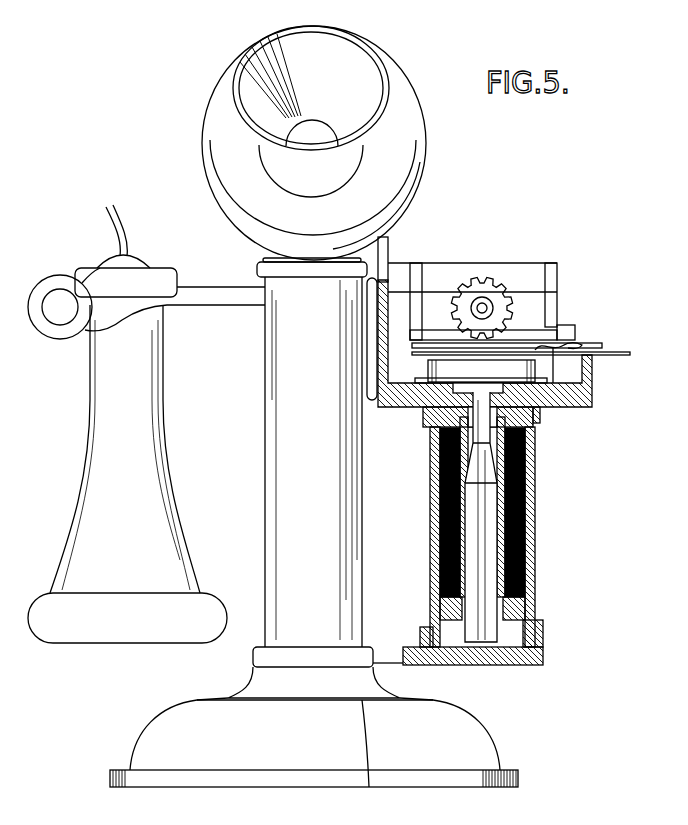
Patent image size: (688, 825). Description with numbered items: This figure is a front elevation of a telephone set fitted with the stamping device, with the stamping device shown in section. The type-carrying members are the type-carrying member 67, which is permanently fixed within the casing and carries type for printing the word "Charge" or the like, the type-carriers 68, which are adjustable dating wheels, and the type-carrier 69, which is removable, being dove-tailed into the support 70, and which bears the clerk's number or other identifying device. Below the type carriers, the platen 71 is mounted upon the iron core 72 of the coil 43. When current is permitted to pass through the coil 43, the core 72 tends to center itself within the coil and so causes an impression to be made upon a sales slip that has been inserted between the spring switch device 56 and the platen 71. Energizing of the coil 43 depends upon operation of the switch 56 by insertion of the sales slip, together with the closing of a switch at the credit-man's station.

The coil 43 is at (533, 533).
The spring switch device 56 is at (587, 407).
The type-carrying member 67 is at (430, 333).
The type-carriers 68 is at (513, 305).
The type-carrier 69 is at (572, 338).
The support 70 is at (556, 313).
The platen 71 is at (553, 348).
The iron core 72 is at (487, 587).